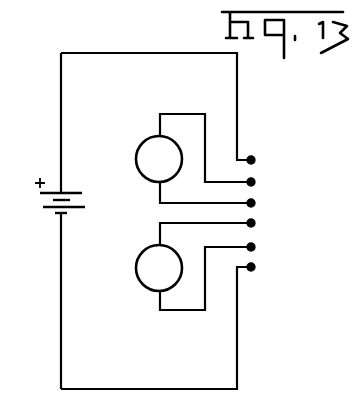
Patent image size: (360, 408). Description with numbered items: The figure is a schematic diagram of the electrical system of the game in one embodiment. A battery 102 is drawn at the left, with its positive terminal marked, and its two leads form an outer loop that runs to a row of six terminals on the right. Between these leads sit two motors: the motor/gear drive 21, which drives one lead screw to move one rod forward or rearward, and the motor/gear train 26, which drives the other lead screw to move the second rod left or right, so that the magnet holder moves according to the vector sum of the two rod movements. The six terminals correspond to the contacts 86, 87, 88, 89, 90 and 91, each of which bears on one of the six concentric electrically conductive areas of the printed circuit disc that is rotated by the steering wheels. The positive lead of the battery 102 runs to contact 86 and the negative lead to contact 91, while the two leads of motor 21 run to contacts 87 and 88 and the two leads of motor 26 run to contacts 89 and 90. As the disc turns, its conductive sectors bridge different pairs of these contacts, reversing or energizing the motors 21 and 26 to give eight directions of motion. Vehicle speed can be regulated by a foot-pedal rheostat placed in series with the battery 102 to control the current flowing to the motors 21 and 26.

The battery 102 is at (73, 192).
The motor/gear drive 21 is at (159, 159).
The motor/gear train 26 is at (159, 268).
The contact 86 is at (254, 162).
The contact 87 is at (254, 184).
The contact 88 is at (254, 205).
The contact 89 is at (254, 225).
The contact 90 is at (254, 249).
The contact 91 is at (254, 269).